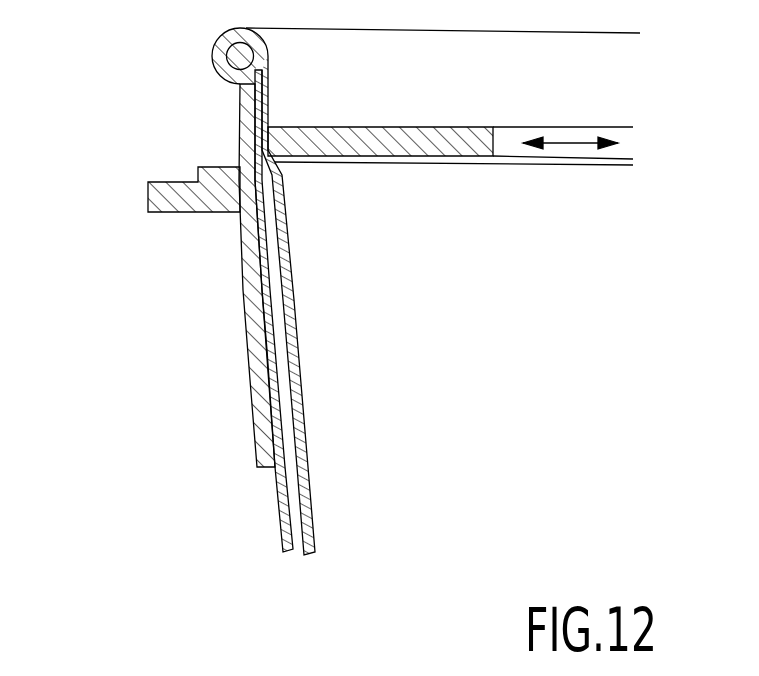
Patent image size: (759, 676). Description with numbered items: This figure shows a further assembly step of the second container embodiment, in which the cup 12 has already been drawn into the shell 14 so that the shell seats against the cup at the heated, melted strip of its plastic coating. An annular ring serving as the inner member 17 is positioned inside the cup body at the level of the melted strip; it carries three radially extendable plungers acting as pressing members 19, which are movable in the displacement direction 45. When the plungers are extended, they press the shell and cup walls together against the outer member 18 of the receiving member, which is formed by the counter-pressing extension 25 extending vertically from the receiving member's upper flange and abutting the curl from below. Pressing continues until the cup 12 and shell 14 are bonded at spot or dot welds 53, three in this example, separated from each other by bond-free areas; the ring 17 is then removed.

The cup 12 is at (283, 537).
The shell 14 is at (280, 506).
The inner member 17 is at (450, 181).
The pressing members 19 is at (417, 148).
The outer member 18 is at (153, 64).
The counter-pressing extension 25 is at (240, 101).
The displacement direction 45 is at (576, 146).
The spot bonds 53 is at (240, 130).